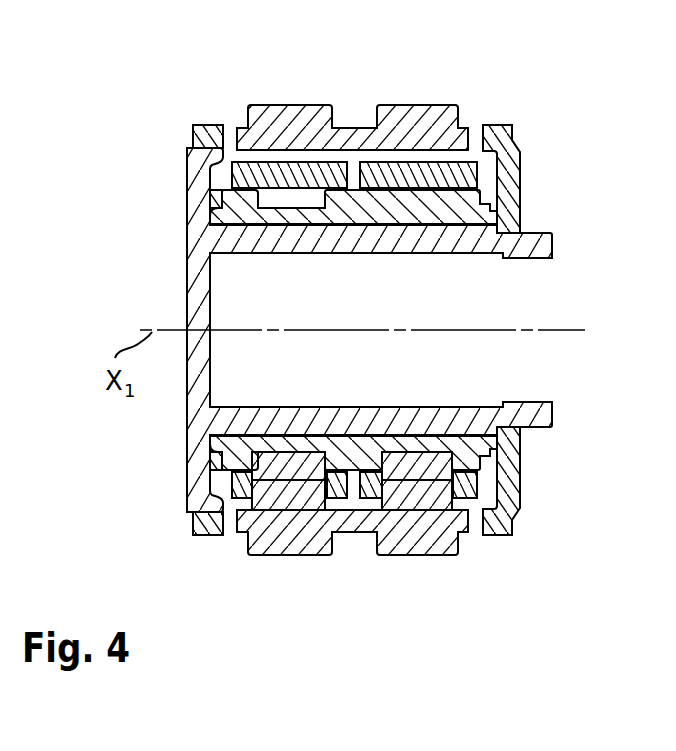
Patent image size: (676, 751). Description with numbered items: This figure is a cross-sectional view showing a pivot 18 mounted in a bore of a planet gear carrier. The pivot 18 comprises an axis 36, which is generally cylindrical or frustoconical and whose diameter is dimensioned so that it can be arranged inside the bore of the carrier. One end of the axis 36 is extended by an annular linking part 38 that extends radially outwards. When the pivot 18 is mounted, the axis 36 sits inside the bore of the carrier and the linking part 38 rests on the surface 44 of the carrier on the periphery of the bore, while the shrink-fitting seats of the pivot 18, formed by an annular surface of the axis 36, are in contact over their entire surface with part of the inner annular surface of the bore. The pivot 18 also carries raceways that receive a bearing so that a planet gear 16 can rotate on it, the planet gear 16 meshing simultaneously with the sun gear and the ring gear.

The planet gear 16 is at (430, 108).
The pivot 18 is at (158, 262).
The axis 36 is at (390, 419).
The annular linking part 38 is at (197, 487).
The surface of the carrier 44 is at (216, 465).